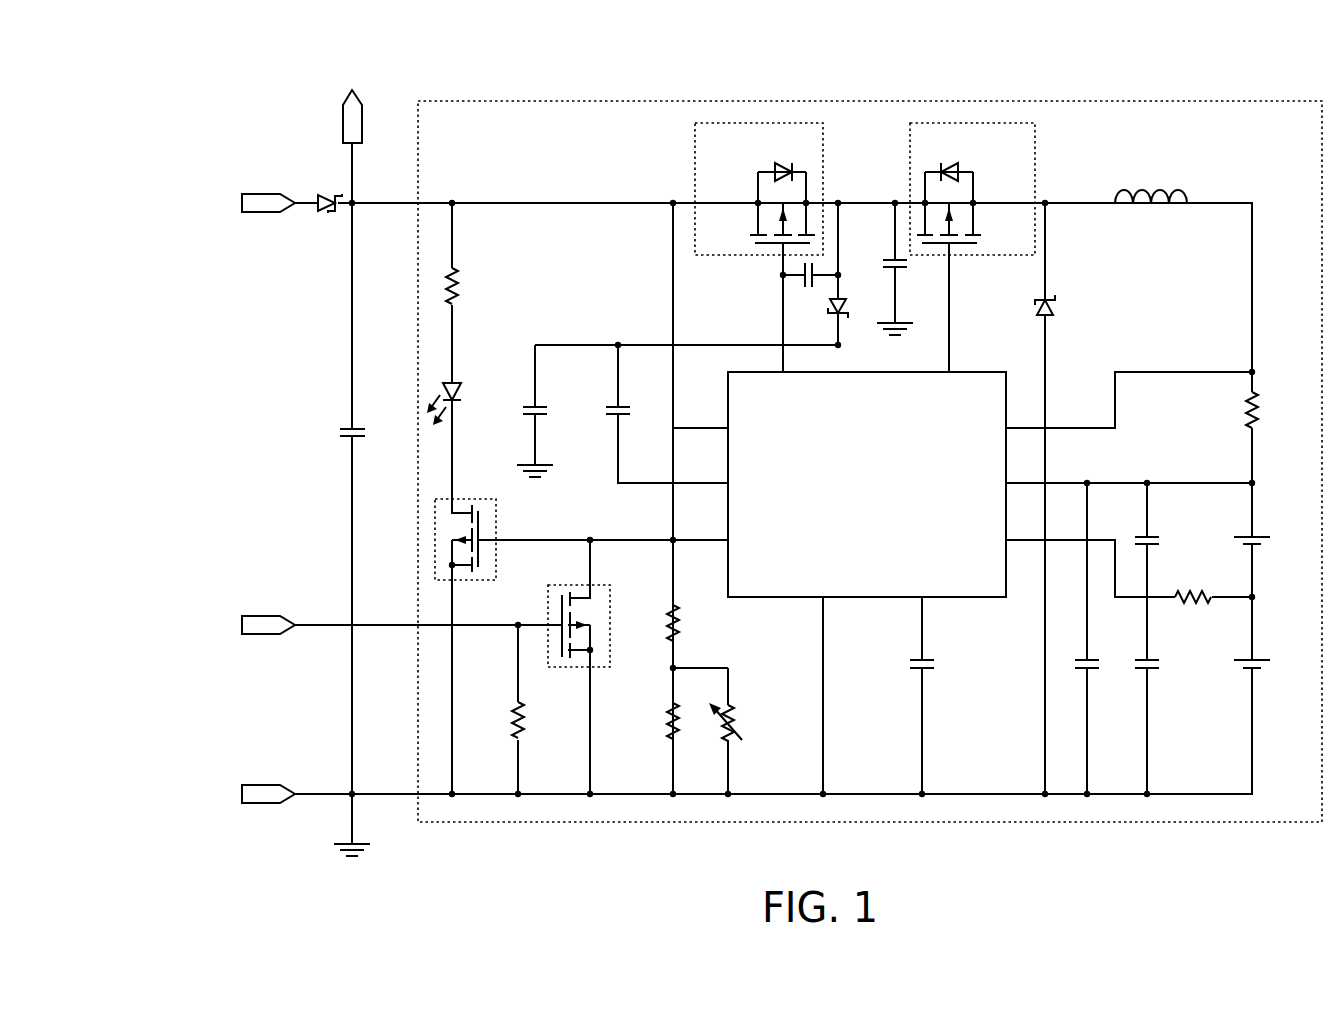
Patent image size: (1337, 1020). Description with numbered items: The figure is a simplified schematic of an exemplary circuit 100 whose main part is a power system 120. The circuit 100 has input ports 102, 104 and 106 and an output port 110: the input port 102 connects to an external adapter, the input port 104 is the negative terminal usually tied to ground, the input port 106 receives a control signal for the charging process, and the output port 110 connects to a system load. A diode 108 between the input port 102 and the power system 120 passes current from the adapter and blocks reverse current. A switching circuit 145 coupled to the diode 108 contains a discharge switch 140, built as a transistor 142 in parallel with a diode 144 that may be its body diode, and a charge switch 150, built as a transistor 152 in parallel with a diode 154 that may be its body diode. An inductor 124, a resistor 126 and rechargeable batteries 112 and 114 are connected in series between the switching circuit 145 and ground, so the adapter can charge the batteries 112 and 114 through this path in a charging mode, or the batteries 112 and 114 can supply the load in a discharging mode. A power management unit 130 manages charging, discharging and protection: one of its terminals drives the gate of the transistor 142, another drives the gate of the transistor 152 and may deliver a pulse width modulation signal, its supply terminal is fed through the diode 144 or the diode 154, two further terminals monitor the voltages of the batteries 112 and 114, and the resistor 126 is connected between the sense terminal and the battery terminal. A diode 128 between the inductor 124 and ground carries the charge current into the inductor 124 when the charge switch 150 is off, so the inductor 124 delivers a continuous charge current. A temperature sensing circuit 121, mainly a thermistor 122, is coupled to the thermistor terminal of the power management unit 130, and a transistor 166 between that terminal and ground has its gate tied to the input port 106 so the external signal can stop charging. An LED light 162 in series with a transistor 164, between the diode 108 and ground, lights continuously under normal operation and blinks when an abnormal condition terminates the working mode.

The circuit 100 is at (258, 100).
The input port 102 is at (252, 212).
The input port 104 is at (270, 783).
The input port 106 is at (270, 614).
The diode 108 is at (320, 208).
The output port 110 is at (362, 116).
The battery 112 is at (1258, 536).
The battery 114 is at (1258, 659).
The power system 120 is at (452, 100).
The temperature sensing circuit 121 is at (714, 630).
The thermistor 122 is at (730, 705).
The inductor 124 is at (1140, 190).
The resistor 126 is at (1257, 392).
The diode 128 is at (1056, 309).
The power management unit 130 is at (957, 372).
The discharge switch 140 is at (823, 152).
The transistor 142 is at (762, 233).
The diode 144 is at (785, 168).
The switching circuit 145 is at (656, 170).
The charge switch 150 is at (1035, 152).
The transistor 152 is at (975, 233).
The diode 154 is at (947, 168).
The LED light 162 is at (458, 386).
The transistor 164 is at (496, 526).
The transistor 166 is at (600, 586).